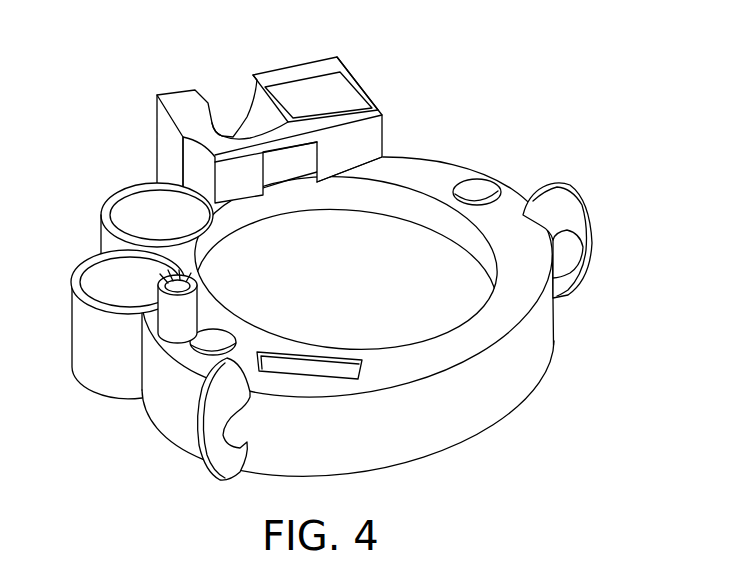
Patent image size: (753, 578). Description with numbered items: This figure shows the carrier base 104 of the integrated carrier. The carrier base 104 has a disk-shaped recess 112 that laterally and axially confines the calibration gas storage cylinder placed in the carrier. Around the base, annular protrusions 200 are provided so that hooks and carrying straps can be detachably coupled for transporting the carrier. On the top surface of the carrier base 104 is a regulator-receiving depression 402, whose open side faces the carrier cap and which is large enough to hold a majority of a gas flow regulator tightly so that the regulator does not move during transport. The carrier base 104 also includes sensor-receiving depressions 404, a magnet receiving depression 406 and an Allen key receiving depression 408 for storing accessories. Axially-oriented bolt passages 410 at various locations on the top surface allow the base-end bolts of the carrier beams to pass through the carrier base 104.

The carrier base 104 is at (531, 393).
The disk-shaped recess 112 is at (357, 288).
The annular protrusions 200 is at (592, 227).
The regulator-receiving depression 402 is at (338, 88).
The sensor-receiving depressions 404 is at (122, 208).
The magnet receiving depression 406 is at (352, 361).
The Allen key receiving depression 408 is at (180, 284).
The axially-oriented bolt passages 410 is at (484, 191).